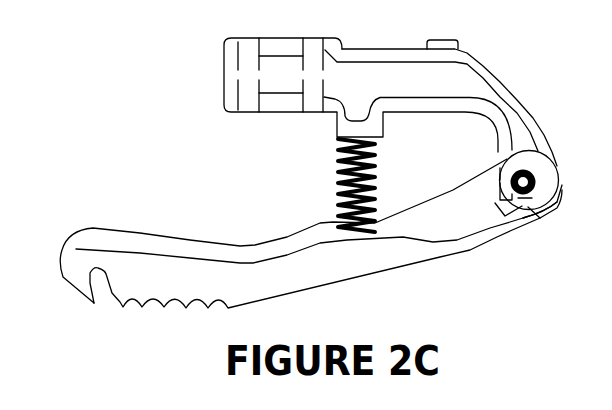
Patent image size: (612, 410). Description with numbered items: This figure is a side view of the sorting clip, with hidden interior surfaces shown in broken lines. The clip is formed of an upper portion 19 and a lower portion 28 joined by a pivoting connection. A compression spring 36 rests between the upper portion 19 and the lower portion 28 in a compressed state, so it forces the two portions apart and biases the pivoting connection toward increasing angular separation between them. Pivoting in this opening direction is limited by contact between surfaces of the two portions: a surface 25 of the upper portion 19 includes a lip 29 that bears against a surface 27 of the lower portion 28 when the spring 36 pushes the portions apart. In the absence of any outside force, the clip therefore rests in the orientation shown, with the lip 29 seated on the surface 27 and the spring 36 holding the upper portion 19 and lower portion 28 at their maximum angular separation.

The upper portion 19 is at (508, 88).
The surface 25 is at (525, 202).
The surface 27 is at (504, 215).
The lower portion 28 is at (70, 277).
The lip 29 is at (533, 206).
The compression spring 36 is at (340, 167).